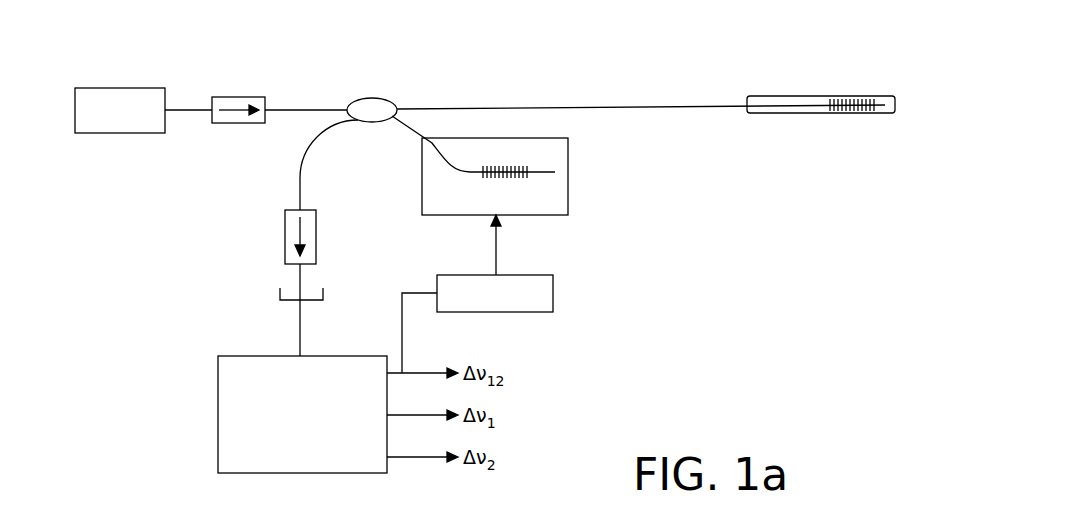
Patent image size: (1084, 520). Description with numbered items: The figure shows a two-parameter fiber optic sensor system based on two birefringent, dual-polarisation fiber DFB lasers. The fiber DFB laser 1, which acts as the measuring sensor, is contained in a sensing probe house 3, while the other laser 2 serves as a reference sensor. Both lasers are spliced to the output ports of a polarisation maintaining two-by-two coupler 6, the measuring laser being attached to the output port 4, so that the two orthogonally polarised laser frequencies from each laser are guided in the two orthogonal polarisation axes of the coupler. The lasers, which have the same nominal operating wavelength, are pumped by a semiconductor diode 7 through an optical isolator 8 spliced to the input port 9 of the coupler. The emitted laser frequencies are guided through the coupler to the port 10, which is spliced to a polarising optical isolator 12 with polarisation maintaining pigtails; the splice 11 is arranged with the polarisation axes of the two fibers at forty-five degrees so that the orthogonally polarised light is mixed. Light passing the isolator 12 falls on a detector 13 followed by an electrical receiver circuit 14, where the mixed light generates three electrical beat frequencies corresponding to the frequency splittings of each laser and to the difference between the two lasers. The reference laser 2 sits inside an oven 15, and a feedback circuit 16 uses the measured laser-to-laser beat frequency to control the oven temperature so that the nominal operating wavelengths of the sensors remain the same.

The fiber DFB laser 1 is at (859, 98).
The reference laser 2 is at (504, 165).
The sensing probe house 3 is at (787, 95).
The output port 4 is at (484, 107).
The polarisation maintaining 2×2 coupler 6 is at (372, 98).
The semiconductor diode 7 is at (113, 121).
The optical isolator 8 is at (238, 95).
The input port 9 is at (306, 107).
The port 10 is at (322, 137).
The splice 11 is at (306, 195).
The polarising optical isolator 12 is at (317, 240).
The detector 13 is at (324, 292).
The electrical receiver circuit 14 is at (289, 427).
The oven 15 is at (568, 170).
The feedback circuit 16 is at (483, 308).